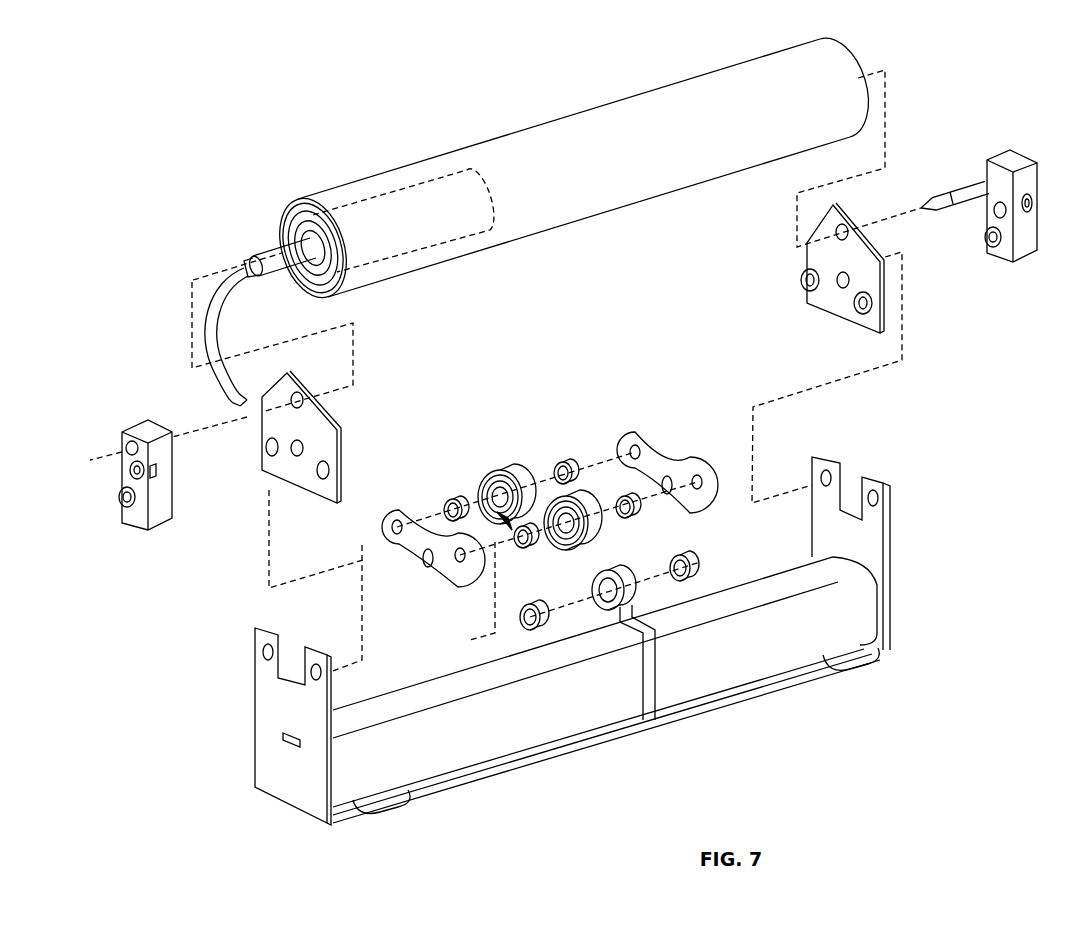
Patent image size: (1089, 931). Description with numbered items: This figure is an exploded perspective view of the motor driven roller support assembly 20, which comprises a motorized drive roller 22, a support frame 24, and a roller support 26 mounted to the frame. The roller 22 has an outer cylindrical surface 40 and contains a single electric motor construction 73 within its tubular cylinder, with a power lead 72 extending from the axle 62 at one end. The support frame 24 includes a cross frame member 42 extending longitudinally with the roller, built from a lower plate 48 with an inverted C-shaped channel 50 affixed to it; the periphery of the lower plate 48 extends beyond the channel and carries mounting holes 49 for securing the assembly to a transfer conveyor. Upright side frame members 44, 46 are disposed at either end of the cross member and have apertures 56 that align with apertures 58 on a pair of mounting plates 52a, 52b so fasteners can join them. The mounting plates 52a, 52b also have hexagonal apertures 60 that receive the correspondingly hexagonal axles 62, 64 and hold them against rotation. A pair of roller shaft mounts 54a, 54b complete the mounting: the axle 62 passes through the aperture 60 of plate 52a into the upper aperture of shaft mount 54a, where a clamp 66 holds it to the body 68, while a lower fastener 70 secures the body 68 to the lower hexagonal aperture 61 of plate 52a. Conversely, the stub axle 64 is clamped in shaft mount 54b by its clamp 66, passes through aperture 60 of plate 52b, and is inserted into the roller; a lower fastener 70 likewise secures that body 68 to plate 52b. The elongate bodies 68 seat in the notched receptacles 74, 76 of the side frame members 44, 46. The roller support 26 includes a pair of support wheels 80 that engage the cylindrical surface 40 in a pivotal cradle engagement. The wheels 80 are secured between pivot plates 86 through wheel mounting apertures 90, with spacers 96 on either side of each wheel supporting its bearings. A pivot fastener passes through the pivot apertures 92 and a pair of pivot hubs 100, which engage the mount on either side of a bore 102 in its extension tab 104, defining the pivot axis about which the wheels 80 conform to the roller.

The motor driven roller support assembly 20 is at (298, 97).
The motorized drive roller 22 is at (677, 55).
The support frame 24 is at (908, 583).
The roller support 26 is at (622, 422).
The outer cylindrical surface 40 is at (473, 140).
The frame member 42 is at (555, 752).
The side frame member 44 is at (263, 752).
The side frame member 46 is at (893, 529).
The lower plate 48 is at (777, 685).
The mounting holes 49 is at (385, 811).
The inverted C-shaped channel 50 is at (435, 745).
The mounting plate 52a is at (580, 387).
The mounting plate 52b is at (828, 312).
The roller shaft mount 54a is at (574, 376).
The roller shaft mount 54b is at (997, 187).
The apertures 56 is at (262, 656).
The apertures 58 is at (268, 448).
The apertures 60 is at (307, 400).
The lower hexagonal aperture 61 is at (307, 448).
The axle 62 is at (275, 245).
The axle 64 is at (960, 183).
The clamp 66 is at (150, 474).
The body 68 is at (155, 510).
The lower fastener 70 is at (120, 499).
The power lead 72 is at (237, 272).
The electric motor construction 73 is at (380, 230).
The notched cutout or receptacle 74 is at (291, 654).
The notched cutout or receptacle 76 is at (849, 489).
The support wheels 80 is at (513, 467).
The pivot plates 86 is at (386, 523).
The wheel mounting apertures 90 is at (397, 522).
The pivot aperture 92 is at (428, 567).
The spacers 96 is at (567, 464).
The pivot hubs 100 is at (697, 568).
The bore 102 is at (667, 642).
The extension tab or flange 104 is at (628, 606).